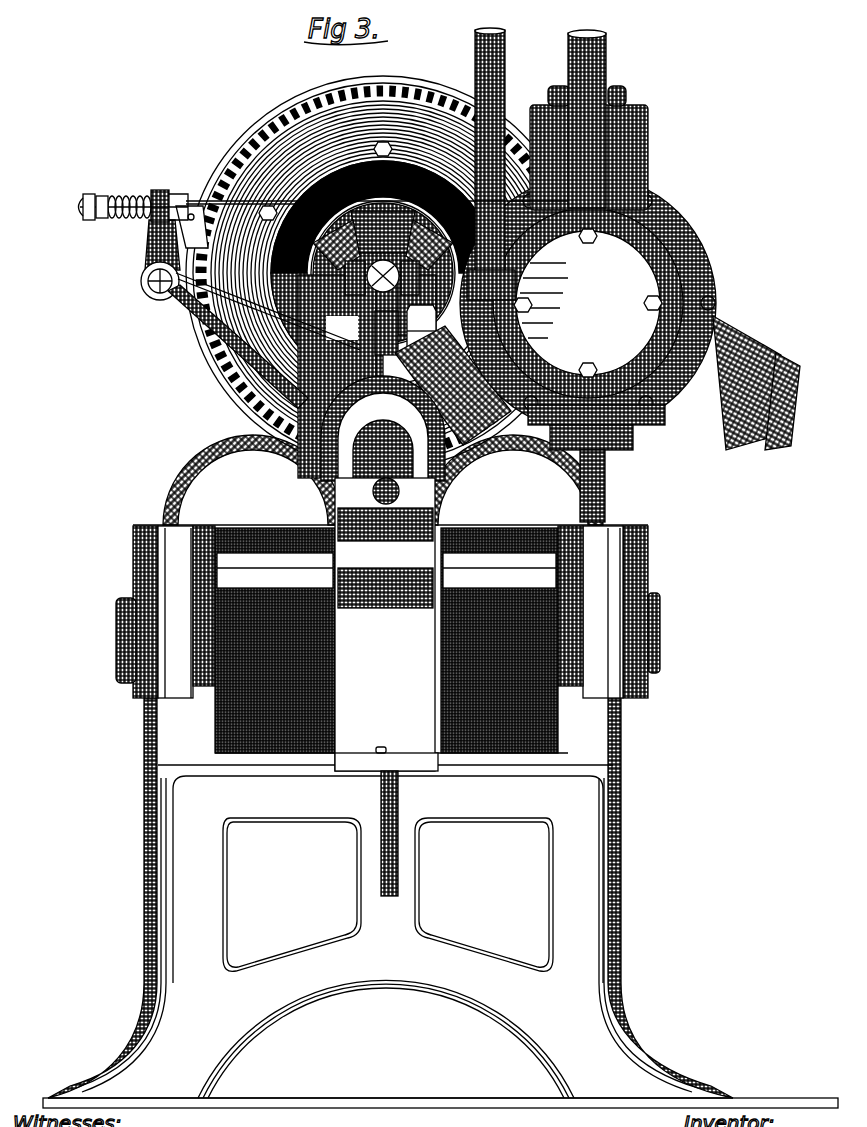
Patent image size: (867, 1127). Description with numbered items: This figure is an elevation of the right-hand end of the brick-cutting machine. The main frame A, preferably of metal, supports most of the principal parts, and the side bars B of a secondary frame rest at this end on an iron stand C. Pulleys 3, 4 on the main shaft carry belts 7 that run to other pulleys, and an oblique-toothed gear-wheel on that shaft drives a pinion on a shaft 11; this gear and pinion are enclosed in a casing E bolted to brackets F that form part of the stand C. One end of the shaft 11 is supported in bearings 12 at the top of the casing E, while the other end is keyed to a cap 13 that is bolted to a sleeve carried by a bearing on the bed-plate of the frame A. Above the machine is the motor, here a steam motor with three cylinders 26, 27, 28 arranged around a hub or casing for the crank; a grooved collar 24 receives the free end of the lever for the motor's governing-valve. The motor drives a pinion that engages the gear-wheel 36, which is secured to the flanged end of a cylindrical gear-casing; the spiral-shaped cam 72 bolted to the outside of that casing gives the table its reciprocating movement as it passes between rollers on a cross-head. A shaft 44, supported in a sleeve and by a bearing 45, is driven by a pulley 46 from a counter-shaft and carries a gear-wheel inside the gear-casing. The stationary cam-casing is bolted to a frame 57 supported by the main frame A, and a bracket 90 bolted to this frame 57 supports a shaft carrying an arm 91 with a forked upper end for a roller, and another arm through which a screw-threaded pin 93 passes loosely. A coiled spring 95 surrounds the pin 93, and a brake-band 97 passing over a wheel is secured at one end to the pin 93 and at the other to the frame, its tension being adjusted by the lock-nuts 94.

The spiral-shaped cam 72 is at (318, 96).
The gear-wheel 36 is at (366, 94).
The brake-band 97 is at (268, 132).
The lock-nuts 94 is at (90, 189).
The coiled spring 95 is at (123, 189).
The screw-threaded pin 93 is at (183, 186).
The arm 91 is at (140, 228).
The bracket 90 is at (135, 286).
The pulley 46 is at (172, 300).
The cap 13 is at (240, 412).
The frame 57 is at (262, 456).
The bearings 12 is at (345, 462).
The shaft 11 is at (386, 493).
The cylinder 26 is at (640, 129).
The bearing 45 is at (515, 297).
The shaft 44 is at (453, 304).
The grooved collar 24 is at (522, 335).
The cylinder 28 is at (725, 332).
The cylinder 27 is at (478, 440).
The pulley 3 is at (215, 562).
The pulley 4 is at (440, 558).
The belts 7 is at (388, 606).
The casing E is at (385, 624).
The side bars B is at (595, 585).
The frame A is at (136, 731).
The brackets F is at (396, 764).
The iron stand C is at (386, 958).